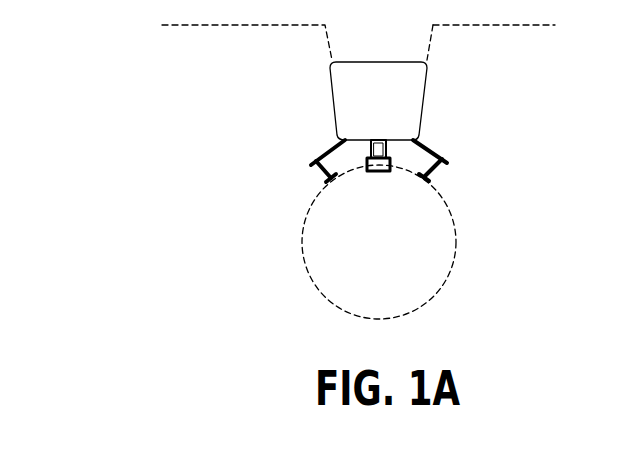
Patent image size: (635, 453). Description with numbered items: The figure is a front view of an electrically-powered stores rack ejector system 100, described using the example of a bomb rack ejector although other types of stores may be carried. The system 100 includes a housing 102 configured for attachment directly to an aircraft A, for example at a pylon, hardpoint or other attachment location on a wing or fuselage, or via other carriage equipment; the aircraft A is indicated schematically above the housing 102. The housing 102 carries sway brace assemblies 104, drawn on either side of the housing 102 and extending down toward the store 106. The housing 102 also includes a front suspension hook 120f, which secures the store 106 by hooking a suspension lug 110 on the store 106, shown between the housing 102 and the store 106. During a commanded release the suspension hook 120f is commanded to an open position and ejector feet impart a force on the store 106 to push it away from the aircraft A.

The electrically-powered stores rack ejector system 100 is at (123, 93).
The aircraft A is at (537, 28).
The housing 102 is at (412, 120).
The sway brace assemblies 104 is at (315, 159).
The store 106 is at (300, 235).
The suspension lug 110 is at (388, 170).
The front suspension hook 120f is at (383, 150).